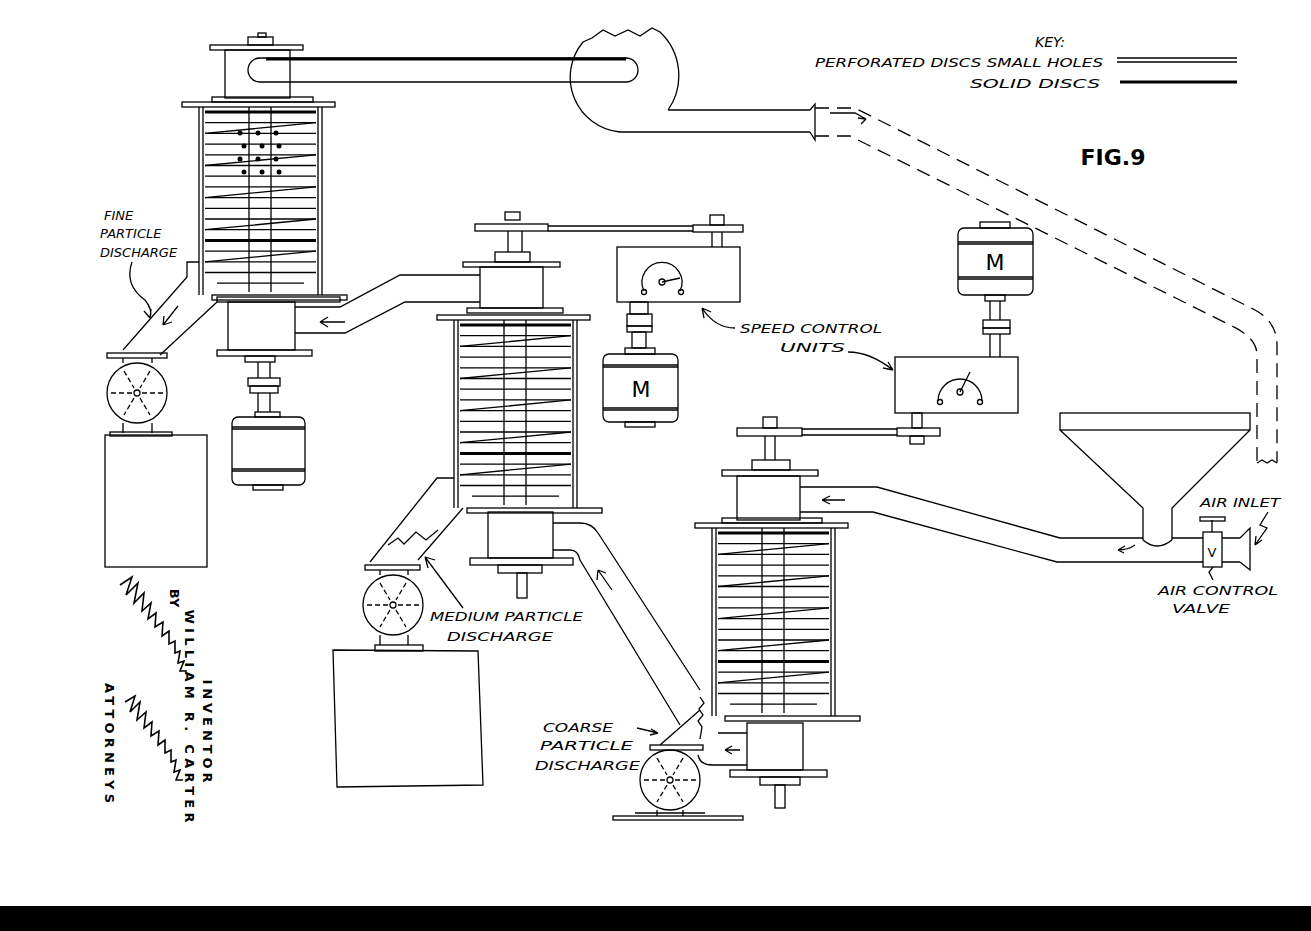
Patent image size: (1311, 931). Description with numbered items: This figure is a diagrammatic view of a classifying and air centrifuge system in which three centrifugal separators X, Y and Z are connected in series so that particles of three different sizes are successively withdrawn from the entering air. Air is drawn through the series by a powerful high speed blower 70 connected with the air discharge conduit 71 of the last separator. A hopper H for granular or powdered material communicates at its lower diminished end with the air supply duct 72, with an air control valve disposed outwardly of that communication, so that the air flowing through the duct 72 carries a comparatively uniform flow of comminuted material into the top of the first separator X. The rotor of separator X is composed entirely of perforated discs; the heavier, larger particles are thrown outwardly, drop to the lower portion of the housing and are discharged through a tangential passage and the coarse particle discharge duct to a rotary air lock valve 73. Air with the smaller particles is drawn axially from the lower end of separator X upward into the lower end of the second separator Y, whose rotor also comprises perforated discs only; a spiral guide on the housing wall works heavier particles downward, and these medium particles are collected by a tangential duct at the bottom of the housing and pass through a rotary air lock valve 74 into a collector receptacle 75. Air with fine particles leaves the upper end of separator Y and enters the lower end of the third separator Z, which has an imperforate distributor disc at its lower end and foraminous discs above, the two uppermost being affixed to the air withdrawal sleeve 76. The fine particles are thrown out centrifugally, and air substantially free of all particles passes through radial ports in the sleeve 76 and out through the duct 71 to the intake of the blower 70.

The blower 70 is at (593, 103).
The air discharge conduit 71 is at (396, 72).
The air supply duct 72 is at (1003, 525).
The rotary air lock valve 73 is at (648, 790).
The rotary air lock valve 74 is at (375, 595).
The collector receptacle 75 is at (470, 724).
The air withdrawal sleeve 76 is at (317, 117).
The centrifuge separator X is at (845, 592).
The centrifuge separator Y is at (577, 462).
The centrifuge separator Z is at (322, 233).
The hopper H is at (1108, 460).